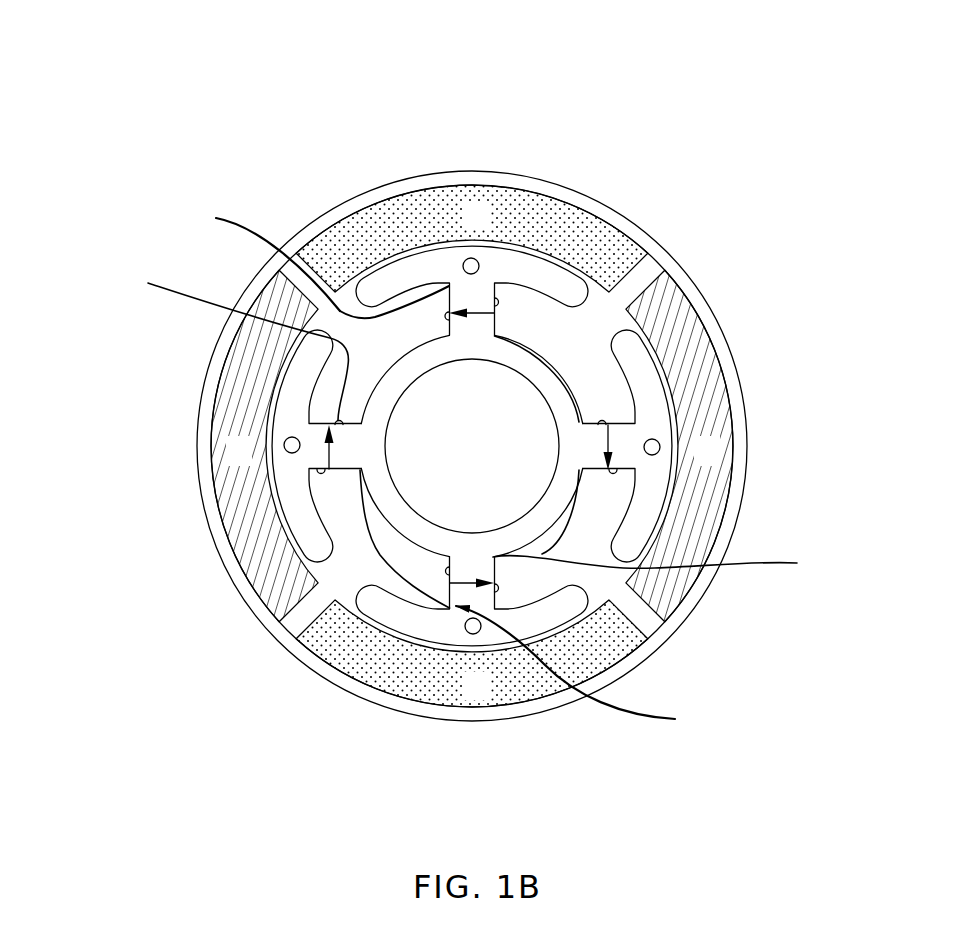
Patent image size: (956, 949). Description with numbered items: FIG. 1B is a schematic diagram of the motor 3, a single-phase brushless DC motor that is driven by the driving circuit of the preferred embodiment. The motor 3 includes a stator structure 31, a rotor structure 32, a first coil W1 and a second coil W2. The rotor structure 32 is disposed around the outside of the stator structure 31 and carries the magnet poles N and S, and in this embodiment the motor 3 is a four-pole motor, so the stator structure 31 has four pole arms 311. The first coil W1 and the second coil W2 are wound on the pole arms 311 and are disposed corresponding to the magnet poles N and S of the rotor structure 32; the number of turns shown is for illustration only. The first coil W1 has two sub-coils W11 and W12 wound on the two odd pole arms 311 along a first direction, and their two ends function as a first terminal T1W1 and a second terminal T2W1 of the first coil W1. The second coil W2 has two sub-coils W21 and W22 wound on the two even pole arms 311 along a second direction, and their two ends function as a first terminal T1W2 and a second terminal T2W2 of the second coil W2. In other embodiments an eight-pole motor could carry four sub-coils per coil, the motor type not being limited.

The motor 3 is at (272, 63).
The stator structure 31 is at (437, 247).
The pole arms 311 is at (640, 373).
The rotor structure 32 is at (606, 208).
The first coil W1 is at (256, 218).
The second coil W2 is at (190, 306).
The second terminal of the first coil T2W1 is at (244, 255).
The second terminal of the second coil T2W2 is at (214, 343).
The first terminal of the first coil T1W1 is at (598, 668).
The first terminal of the second coil T1W2 is at (661, 554).
The sub-coil W11 is at (494, 578).
The sub-coil W12 is at (494, 319).
The sub-coil W21 is at (605, 435).
The sub-coil W22 is at (322, 463).